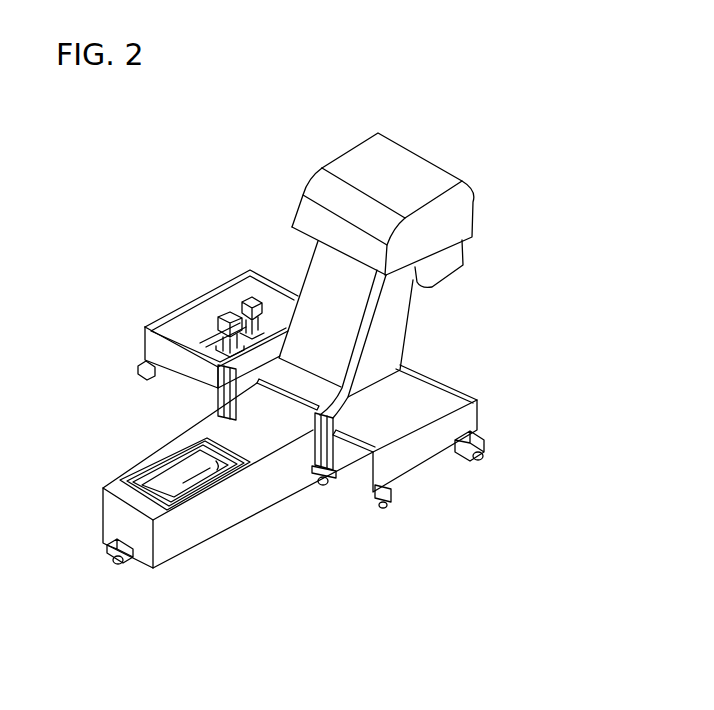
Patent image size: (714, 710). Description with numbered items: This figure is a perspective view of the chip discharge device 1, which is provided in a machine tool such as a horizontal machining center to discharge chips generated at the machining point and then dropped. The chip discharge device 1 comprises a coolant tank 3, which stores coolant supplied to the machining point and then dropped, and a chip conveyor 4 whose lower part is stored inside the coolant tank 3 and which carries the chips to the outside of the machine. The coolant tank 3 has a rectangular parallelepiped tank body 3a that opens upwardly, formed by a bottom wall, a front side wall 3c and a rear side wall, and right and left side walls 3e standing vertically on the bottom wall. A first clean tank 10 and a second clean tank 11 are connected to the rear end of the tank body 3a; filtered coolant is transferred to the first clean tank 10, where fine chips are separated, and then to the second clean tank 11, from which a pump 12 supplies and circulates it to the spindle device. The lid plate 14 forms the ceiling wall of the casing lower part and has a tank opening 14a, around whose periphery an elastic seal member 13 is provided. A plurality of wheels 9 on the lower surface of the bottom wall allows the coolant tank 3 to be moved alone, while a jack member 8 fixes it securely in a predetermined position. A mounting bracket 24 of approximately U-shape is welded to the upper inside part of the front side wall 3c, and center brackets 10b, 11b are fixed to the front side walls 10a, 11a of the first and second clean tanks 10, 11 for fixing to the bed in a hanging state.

The chip discharge device 1 is at (384, 104).
The coolant tank 3 is at (102, 457).
The tank body 3a is at (258, 517).
The front side wall 3c is at (144, 553).
The right and left side walls 3e is at (181, 541).
The chip conveyor 4 is at (307, 168).
The jack member 8 is at (140, 368).
The wheels 9 is at (118, 565).
The first clean tank 10 is at (467, 385).
The front side wall of first clean tank 10a is at (360, 488).
The center bracket 10b is at (322, 482).
The second clean tank 11 is at (216, 284).
The front side wall of second clean tank 11a is at (145, 342).
The center brackets 11b is at (218, 380).
The pump 12 is at (232, 310).
The seal member 13 is at (217, 465).
The lid plate 14 is at (258, 446).
The tank opening 14a is at (157, 452).
The mounting bracket 24 is at (106, 489).